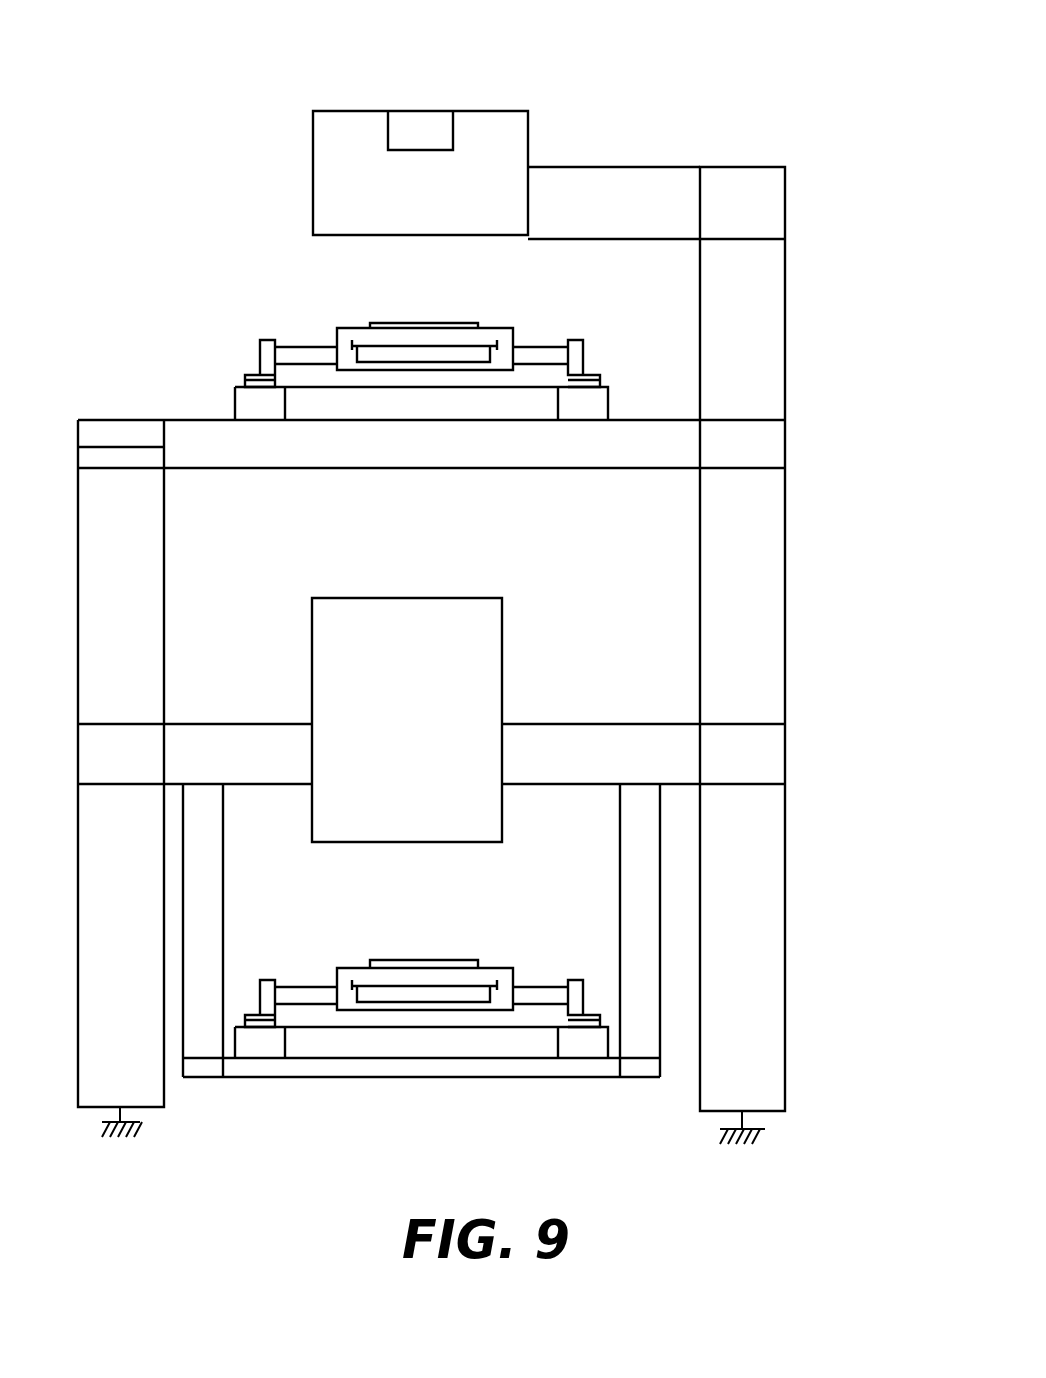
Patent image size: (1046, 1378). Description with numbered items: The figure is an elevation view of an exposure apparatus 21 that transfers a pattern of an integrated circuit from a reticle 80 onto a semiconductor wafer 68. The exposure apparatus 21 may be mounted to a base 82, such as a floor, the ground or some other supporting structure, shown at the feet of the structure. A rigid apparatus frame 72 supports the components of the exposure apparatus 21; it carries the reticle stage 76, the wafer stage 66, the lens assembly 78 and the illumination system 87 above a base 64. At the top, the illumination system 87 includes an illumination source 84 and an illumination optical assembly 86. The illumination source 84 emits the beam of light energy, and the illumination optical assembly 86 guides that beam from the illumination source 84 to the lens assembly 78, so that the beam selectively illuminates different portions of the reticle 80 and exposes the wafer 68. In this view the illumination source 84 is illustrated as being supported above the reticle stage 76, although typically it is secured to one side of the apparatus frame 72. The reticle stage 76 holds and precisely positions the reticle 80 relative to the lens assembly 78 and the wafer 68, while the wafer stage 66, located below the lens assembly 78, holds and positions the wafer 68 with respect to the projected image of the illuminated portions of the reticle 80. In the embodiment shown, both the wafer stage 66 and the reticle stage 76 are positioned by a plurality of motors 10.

The motors 10 is at (245, 375).
The exposure apparatus 21 is at (830, 373).
The base 64 is at (452, 1070).
The wafer stage 66 is at (503, 967).
The semiconductor wafer 68 is at (423, 958).
The apparatus frame 72 is at (757, 598).
The reticle stage 76 is at (497, 330).
The lens assembly 78 is at (482, 673).
The reticle 80 is at (423, 320).
The base 82 is at (765, 1133).
The illumination source 84 is at (418, 124).
The illumination optical assembly 86 is at (487, 124).
The illumination system 87 is at (433, 117).